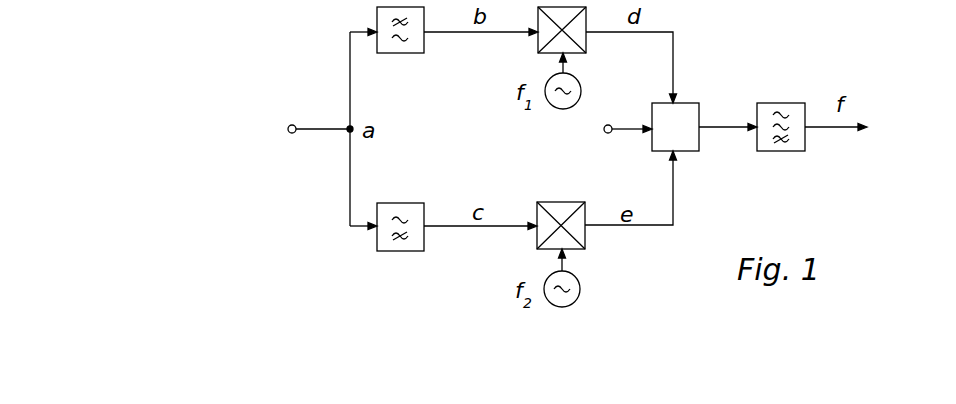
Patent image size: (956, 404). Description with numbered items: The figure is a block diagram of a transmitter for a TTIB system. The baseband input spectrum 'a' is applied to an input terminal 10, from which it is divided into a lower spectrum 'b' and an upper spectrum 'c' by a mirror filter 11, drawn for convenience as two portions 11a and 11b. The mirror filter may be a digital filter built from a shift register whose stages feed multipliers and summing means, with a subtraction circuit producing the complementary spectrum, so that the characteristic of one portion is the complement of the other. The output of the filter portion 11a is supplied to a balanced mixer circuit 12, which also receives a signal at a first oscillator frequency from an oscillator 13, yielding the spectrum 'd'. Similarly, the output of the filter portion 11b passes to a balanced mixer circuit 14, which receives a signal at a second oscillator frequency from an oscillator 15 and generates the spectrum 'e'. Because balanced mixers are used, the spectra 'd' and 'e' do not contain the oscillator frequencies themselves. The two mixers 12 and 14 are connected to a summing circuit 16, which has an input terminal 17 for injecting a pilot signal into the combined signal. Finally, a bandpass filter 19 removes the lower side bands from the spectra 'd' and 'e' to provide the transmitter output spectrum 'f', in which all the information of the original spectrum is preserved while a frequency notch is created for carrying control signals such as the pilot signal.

The input terminal 10 is at (297, 136).
The mirror filter 11 is at (458, 145).
The filter portion 11a is at (410, 53).
The filter portion 11b is at (407, 203).
The balanced mixer circuit 12 is at (586, 40).
The oscillator 13 is at (563, 109).
The balanced mixer circuit 14 is at (562, 202).
The oscillator 15 is at (580, 283).
The summing circuit 16 is at (688, 103).
The input terminal 17 is at (609, 125).
The bandpass filter 19 is at (800, 103).